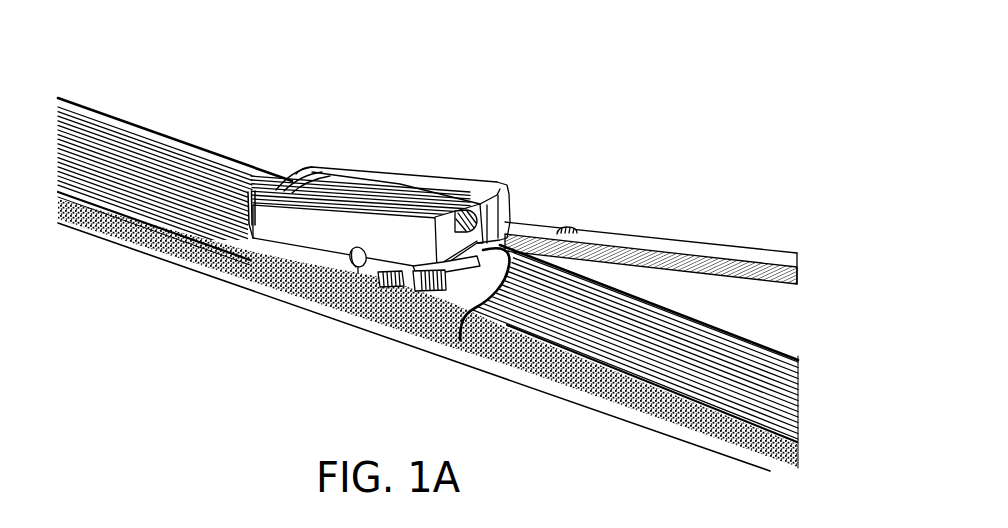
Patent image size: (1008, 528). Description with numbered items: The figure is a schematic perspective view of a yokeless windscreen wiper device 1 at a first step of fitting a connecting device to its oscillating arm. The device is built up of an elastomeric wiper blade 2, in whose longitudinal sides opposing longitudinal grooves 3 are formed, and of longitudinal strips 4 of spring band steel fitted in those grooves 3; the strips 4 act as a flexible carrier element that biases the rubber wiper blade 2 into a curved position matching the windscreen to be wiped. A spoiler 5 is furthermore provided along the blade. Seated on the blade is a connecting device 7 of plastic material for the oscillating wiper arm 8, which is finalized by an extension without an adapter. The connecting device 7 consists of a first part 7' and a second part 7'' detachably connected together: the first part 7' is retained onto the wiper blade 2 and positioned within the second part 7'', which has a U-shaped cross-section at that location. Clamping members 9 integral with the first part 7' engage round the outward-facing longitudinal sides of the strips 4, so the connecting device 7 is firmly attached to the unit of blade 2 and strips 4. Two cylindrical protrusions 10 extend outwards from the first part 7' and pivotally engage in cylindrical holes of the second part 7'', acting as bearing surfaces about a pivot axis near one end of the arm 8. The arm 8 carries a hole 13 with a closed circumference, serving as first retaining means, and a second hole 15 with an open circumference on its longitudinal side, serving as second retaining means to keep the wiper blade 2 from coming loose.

The windscreen wiper device 1 is at (428, 284).
The wiper blade 2 is at (187, 257).
The longitudinal grooves 3 is at (650, 388).
The longitudinal strips 4 is at (572, 387).
The spoiler 5 is at (190, 167).
The connecting device 7 is at (379, 172).
The first part 7' is at (405, 331).
The second part 7'' is at (373, 164).
The oscillating wiper arm 8 is at (747, 252).
The clamping members 9 is at (445, 345).
The cylindrical protrusions 10 is at (323, 295).
The hole 13 is at (577, 227).
The second hole 15 is at (657, 237).